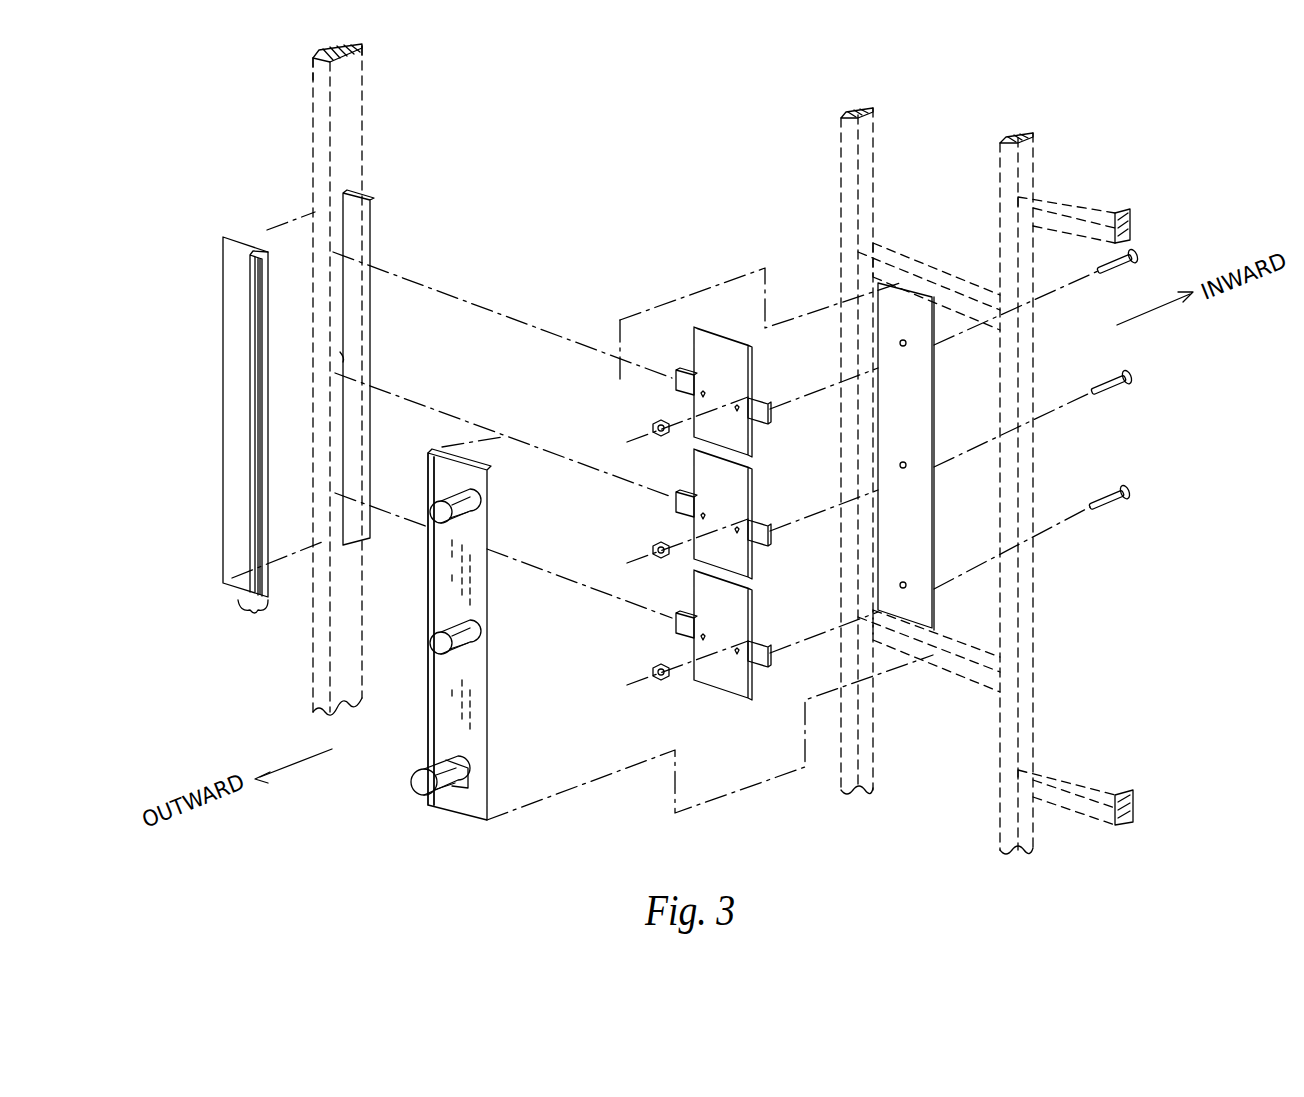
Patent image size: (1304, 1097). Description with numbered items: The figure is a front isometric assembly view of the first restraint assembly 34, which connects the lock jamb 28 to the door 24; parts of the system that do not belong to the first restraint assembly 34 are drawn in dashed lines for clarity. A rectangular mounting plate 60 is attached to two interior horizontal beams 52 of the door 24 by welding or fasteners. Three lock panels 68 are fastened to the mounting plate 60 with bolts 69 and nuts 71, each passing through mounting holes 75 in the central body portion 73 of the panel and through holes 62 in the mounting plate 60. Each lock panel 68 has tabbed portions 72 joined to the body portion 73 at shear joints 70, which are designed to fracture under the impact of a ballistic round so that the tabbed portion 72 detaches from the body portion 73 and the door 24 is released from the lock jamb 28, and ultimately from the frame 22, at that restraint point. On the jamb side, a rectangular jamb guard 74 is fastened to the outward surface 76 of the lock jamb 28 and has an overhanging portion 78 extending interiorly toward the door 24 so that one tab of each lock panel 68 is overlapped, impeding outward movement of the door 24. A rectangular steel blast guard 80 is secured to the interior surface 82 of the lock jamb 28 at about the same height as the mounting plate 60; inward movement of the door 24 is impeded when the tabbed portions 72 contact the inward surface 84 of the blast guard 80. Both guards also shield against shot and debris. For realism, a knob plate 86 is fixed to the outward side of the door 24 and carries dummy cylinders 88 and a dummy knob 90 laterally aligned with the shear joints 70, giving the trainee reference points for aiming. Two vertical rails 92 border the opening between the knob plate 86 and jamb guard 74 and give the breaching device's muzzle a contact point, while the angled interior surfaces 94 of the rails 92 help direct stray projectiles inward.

The frame 22 is at (330, 392).
The door 24 is at (856, 115).
The lock jamb 28 is at (325, 714).
The first restraint assembly 34 is at (620, 230).
The interior horizontal beams 52 is at (920, 264).
The mounting plate 60 is at (906, 456).
The hole 62 is at (904, 341).
The lock panels 68 is at (722, 528).
The bolts 69 is at (1136, 254).
The shear joints 70 is at (690, 387).
The nuts 71 is at (652, 428).
The tabbed portions 72 is at (682, 368).
The central body portion 73 is at (699, 364).
The jamb guard 74 is at (228, 441).
The mounting holes 75 is at (738, 408).
The outward surface 76 is at (322, 100).
The overhanging portion 78 is at (253, 622).
The blast guard 80 is at (373, 367).
The interior surface 82 is at (345, 70).
The inward surface 84 is at (340, 352).
The knob plate 86 is at (447, 661).
The dummy cylinders 88 is at (470, 500).
The dummy knob 90 is at (422, 792).
The vertical rails 92 is at (252, 485).
The interior surfaces 94 is at (262, 295).